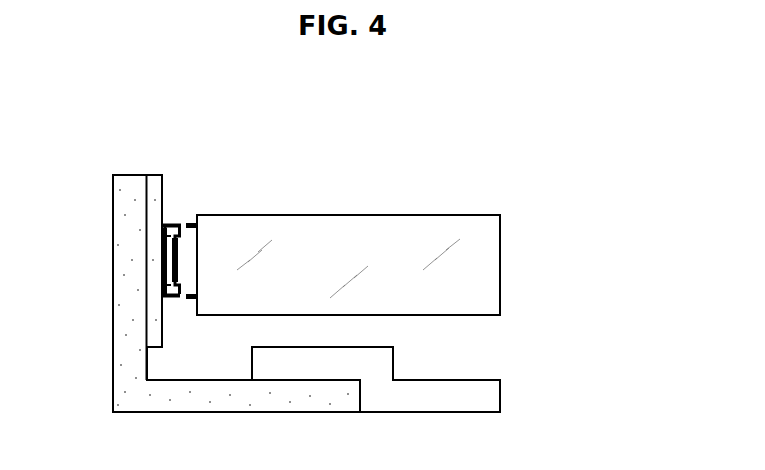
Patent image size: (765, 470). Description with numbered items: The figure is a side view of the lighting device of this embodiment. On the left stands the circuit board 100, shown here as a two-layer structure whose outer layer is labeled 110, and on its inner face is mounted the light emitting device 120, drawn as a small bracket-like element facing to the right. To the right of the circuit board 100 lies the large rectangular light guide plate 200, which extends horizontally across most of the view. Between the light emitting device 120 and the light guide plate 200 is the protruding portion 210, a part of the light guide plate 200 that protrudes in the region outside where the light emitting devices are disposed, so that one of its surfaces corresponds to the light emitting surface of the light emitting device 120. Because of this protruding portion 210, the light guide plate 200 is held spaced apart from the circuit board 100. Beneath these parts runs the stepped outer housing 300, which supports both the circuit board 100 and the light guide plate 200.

The circuit board 100 is at (237, 108).
The wall 110 is at (128, 190).
The light emitting device 120 is at (175, 222).
The light guide plate 200 is at (487, 265).
The protruding portion 210 is at (170, 300).
The outer housing 300 is at (487, 398).